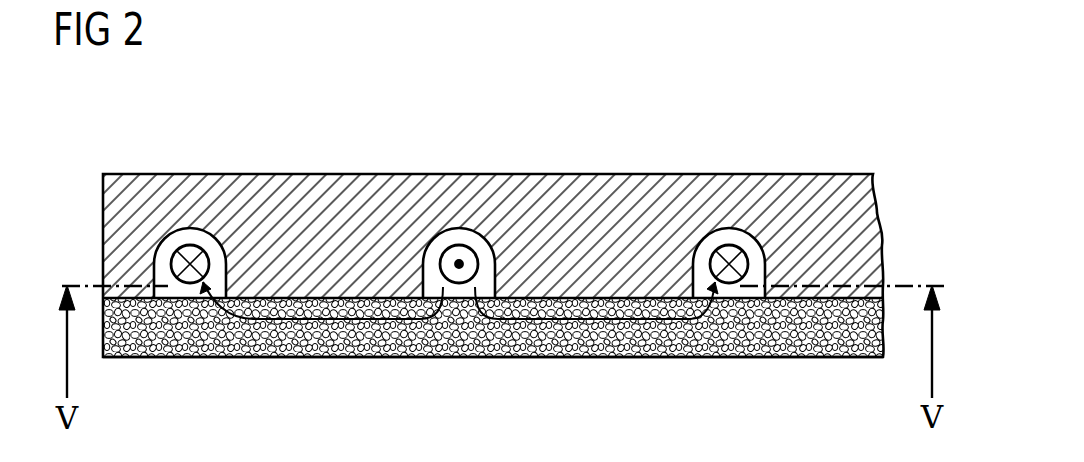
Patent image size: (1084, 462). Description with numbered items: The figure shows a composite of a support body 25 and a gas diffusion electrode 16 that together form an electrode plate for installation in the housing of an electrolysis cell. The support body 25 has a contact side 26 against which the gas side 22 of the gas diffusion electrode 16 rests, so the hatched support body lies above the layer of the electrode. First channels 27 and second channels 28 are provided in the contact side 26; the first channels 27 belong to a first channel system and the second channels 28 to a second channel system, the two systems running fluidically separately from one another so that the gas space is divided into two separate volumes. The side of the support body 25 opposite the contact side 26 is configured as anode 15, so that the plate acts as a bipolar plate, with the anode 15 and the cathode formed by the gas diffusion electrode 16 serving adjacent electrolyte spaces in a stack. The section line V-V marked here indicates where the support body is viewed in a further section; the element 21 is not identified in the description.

The anode 15 is at (288, 157).
The gas diffusion electrode 16 is at (382, 343).
The bottom surface 21 is at (318, 359).
The gas side 22 is at (347, 298).
The support body 25 is at (578, 192).
The contact side 26 is at (815, 318).
The first channels 27 is at (190, 236).
The second channels 28 is at (461, 236).